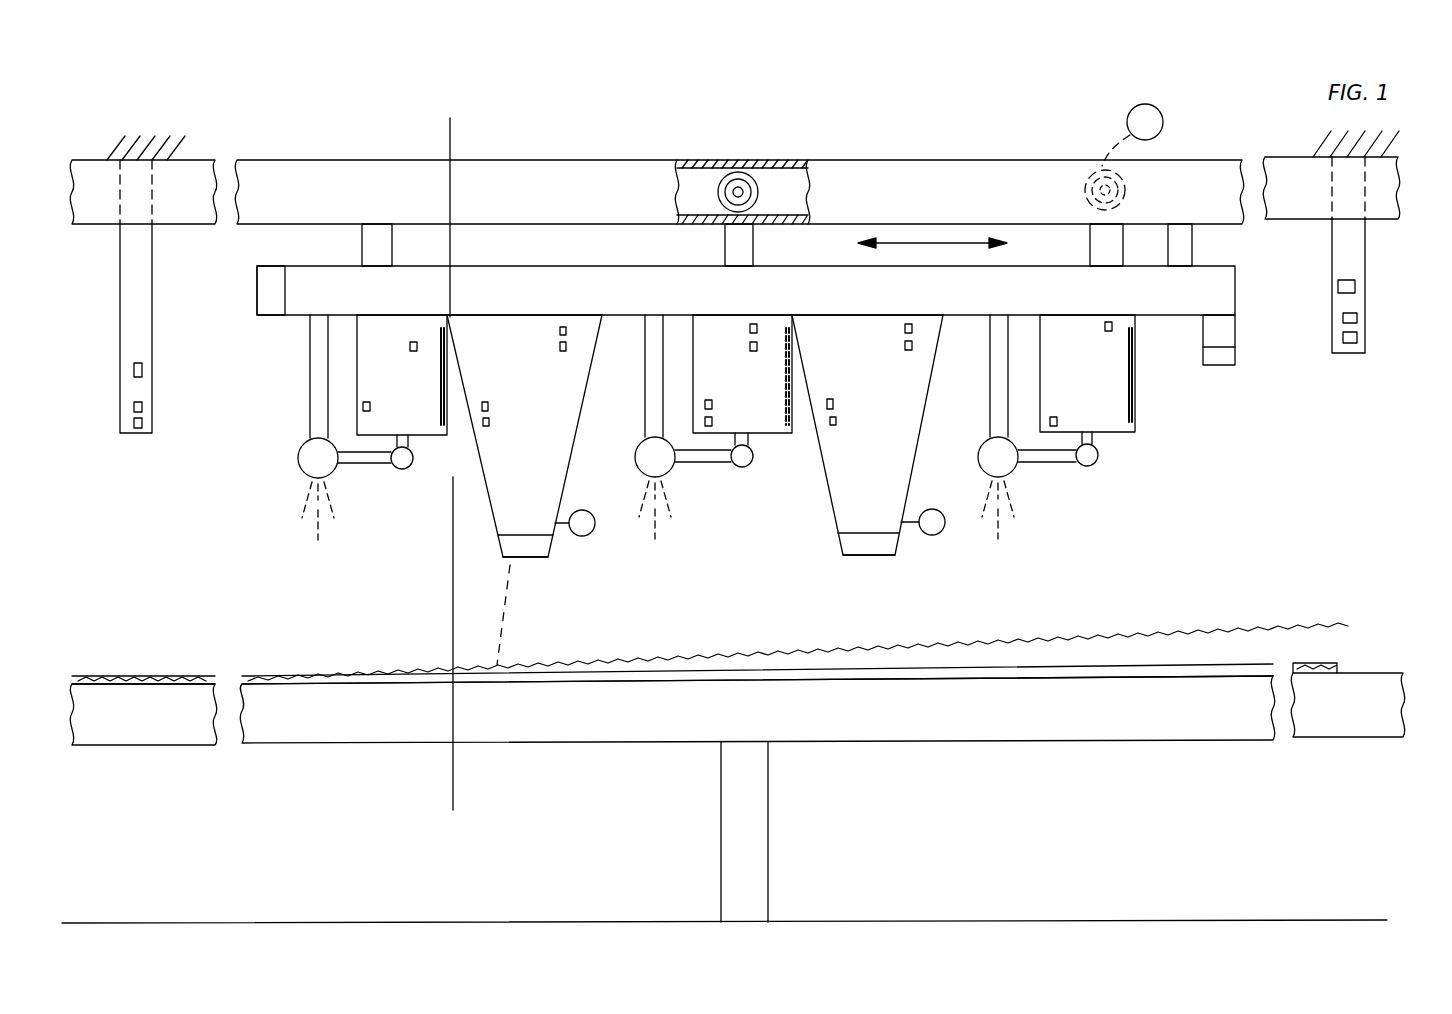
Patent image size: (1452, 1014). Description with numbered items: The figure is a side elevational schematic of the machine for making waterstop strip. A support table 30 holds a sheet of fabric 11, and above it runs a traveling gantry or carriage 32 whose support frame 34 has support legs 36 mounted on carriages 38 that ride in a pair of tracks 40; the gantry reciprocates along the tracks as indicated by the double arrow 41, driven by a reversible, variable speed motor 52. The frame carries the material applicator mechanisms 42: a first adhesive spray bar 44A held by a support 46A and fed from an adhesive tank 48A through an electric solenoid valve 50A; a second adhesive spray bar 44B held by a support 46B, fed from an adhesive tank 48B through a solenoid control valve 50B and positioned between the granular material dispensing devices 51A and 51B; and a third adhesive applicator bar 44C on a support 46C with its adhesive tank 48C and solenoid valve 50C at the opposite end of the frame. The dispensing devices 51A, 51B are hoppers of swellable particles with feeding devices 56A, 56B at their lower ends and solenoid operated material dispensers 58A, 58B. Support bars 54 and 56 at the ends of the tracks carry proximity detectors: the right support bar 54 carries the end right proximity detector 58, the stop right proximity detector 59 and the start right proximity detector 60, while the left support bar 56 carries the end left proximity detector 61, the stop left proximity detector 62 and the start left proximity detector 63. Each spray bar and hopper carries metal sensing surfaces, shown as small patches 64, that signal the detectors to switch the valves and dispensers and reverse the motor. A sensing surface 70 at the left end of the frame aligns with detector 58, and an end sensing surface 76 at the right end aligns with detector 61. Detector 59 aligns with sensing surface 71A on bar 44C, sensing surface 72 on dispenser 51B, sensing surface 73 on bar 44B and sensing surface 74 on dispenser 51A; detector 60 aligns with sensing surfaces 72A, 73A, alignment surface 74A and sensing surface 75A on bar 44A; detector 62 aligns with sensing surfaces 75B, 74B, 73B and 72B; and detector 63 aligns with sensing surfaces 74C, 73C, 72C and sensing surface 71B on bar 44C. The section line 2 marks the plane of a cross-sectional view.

The section line 2- 2 is at (492, 120).
The fabric sheet 11 is at (132, 682).
The support table 30 is at (1115, 742).
The traveling gantry or carriage 32 is at (236, 310).
The support frame 34 is at (566, 284).
The support legs 36 is at (362, 246).
The carriages 38 is at (752, 180).
The tracks 40 is at (1198, 160).
The double arrow 41 is at (955, 243).
The material applicator mechanisms 42 is at (310, 543).
The first adhesive spray bar 44A is at (303, 468).
The second adhesive spray bar 44B is at (635, 452).
The third adhesive applicator bar 44C is at (1017, 470).
The support 46A is at (312, 348).
The support 46B is at (654, 383).
The support 46C is at (991, 417).
The adhesive tank 48A is at (392, 333).
The adhesive tank 48B is at (727, 330).
The adhesive tank 48C is at (1079, 333).
The electric solenoid valve 50A is at (413, 466).
The solenoid control valve 50B is at (753, 462).
The solenoid valve 50C is at (1095, 467).
The granular material dispensing device 51A is at (515, 500).
The granular material dispensing device 51B is at (850, 497).
The motor 52 is at (1158, 110).
The support bar 54 is at (1367, 273).
The support bar 56 is at (120, 373).
The feeding device 56A is at (537, 553).
The feeding device 56B is at (877, 547).
The end right proximity detector 58 is at (1355, 286).
The material dispenser 58A is at (588, 537).
The material dispenser 58B is at (942, 537).
The stop right proximity detector 59 is at (1357, 318).
The start right proximity detector 60 is at (1357, 340).
The end left proximity detector 61 is at (134, 376).
The stop left proximity detector 62 is at (134, 407).
The start left proximity detector 63 is at (134, 423).
The sensing surfaces 64 is at (883, 337).
The sensing surface 70 is at (262, 287).
The sensing surface 71A is at (1105, 327).
The sensing surface 71B is at (1058, 420).
The sensing surface 72 is at (912, 324).
The sensing surface 72A is at (905, 346).
The sensing surface 72B is at (834, 404).
The sensing surface 72C is at (838, 421).
The sensing surface 73 is at (757, 323).
The sensing surface 73A is at (758, 347).
The sensing surface 73B is at (712, 402).
The sensing surface 73C is at (712, 421).
The sensing surface 74 is at (560, 331).
The alignment surface 74A is at (560, 347).
The sensing surface 74B is at (488, 405).
The sensing surface 74C is at (489, 422).
The sensing surface 75A is at (418, 342).
The sensing surface 75B is at (370, 405).
The end sensing surface 76 is at (1225, 357).